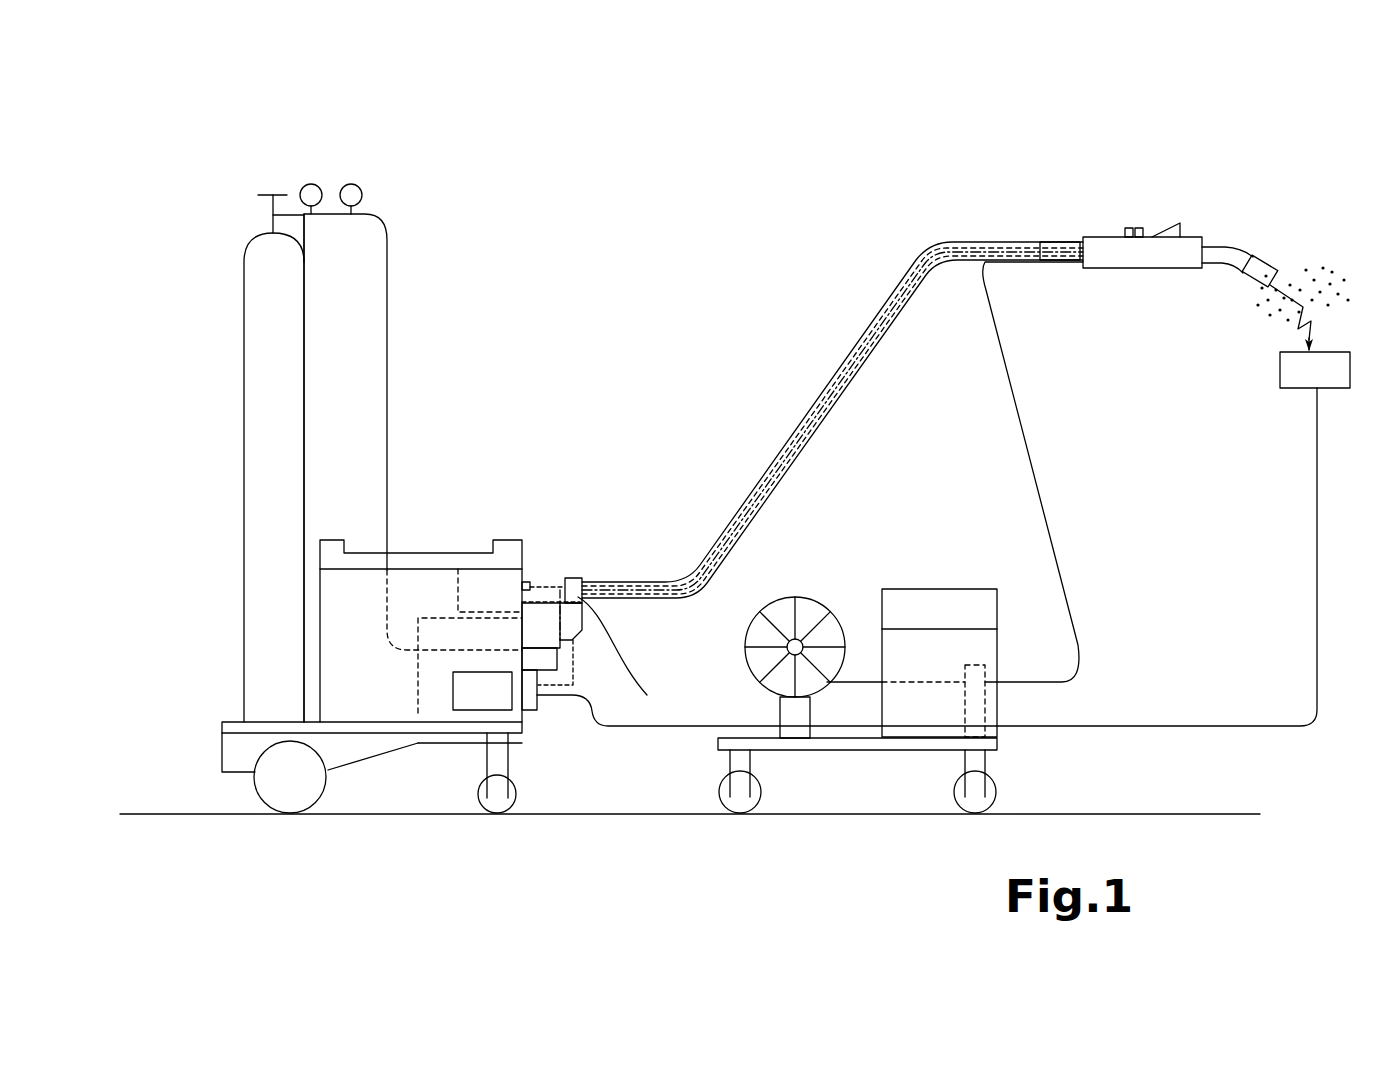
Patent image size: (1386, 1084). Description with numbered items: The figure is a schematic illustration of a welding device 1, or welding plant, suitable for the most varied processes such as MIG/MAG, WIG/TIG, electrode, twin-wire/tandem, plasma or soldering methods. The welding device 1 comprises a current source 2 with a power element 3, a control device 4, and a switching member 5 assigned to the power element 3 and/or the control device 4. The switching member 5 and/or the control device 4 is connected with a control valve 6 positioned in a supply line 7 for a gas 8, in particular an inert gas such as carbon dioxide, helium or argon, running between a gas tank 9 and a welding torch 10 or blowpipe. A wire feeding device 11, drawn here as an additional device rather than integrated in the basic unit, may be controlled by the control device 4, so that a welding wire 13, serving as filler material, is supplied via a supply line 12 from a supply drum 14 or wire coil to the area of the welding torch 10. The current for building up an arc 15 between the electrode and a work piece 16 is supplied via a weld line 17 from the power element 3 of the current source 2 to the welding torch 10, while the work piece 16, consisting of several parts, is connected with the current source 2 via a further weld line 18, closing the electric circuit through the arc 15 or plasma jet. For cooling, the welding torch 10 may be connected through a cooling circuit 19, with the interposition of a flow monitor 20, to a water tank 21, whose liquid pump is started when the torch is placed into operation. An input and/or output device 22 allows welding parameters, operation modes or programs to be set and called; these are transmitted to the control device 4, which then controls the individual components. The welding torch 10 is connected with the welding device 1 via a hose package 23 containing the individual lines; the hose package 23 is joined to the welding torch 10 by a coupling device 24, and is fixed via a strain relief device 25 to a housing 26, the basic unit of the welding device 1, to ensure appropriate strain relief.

The welding device 1 is at (198, 182).
The current source 2 is at (470, 420).
The power element 3 is at (473, 700).
The control device 4 is at (418, 687).
The switching member 5 is at (535, 722).
The control valve 6 is at (535, 663).
The supply line 7 is at (967, 262).
The gas 8 is at (1285, 247).
The gas tank 9 is at (272, 318).
The welding torch 10 is at (1192, 207).
The wire feeding device 11 is at (1048, 772).
The supply line 12 is at (1042, 503).
The welding wire 13 is at (1293, 293).
The supply drum 14 is at (805, 610).
The arc 15 is at (1287, 333).
The work piece 16 is at (1325, 370).
The weld line 17 is at (888, 310).
The further weld line 18 is at (1318, 578).
The cooling circuit 19 is at (743, 507).
The flow monitor 20 is at (555, 580).
The water tank 21 is at (482, 580).
The input and/or output device 22 is at (513, 569).
The hose package 23 is at (907, 233).
The coupling device 24 is at (1060, 243).
The strain relief device 25 is at (626, 655).
The housing 26 is at (310, 585).